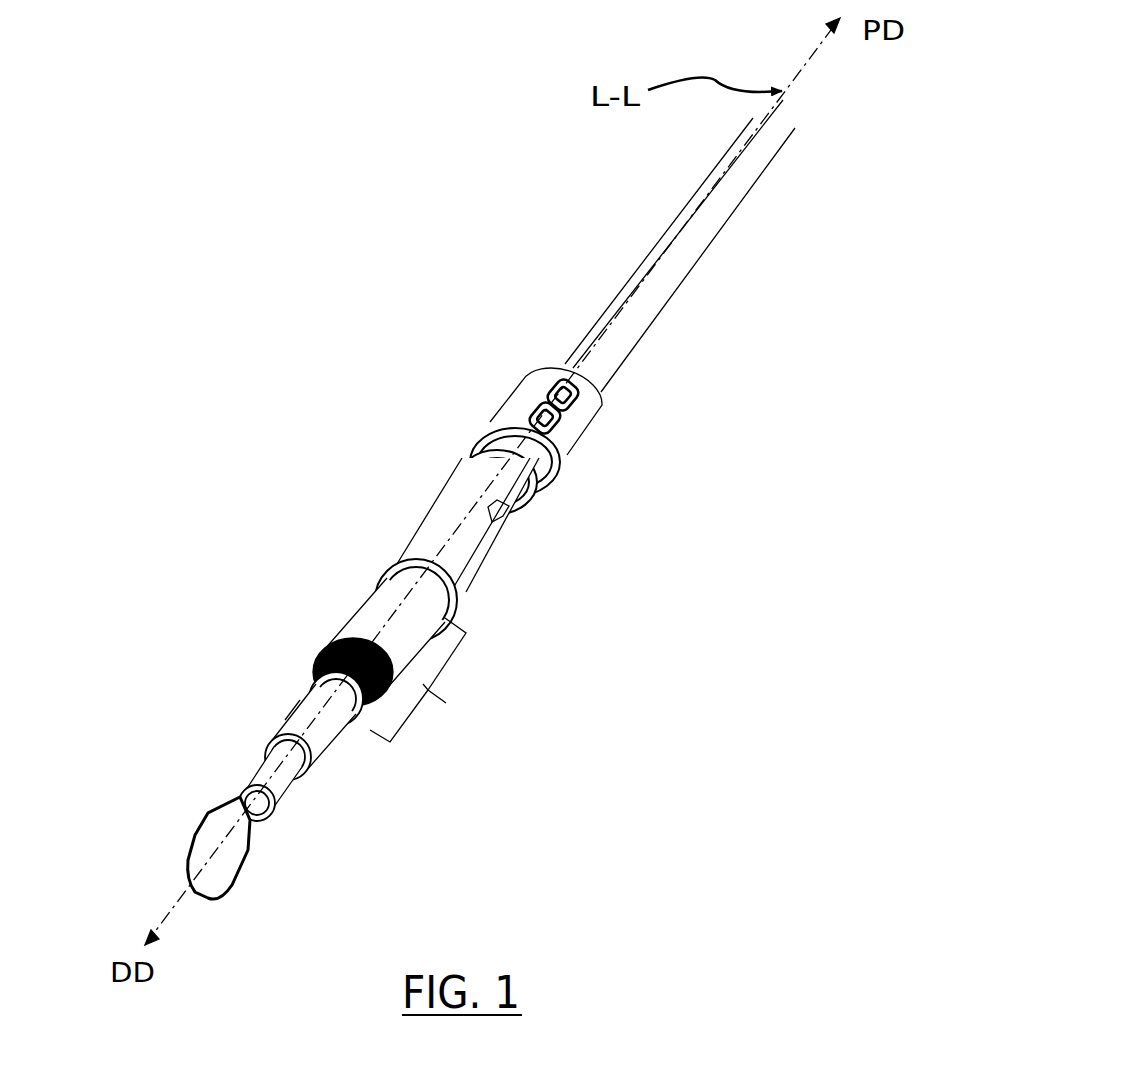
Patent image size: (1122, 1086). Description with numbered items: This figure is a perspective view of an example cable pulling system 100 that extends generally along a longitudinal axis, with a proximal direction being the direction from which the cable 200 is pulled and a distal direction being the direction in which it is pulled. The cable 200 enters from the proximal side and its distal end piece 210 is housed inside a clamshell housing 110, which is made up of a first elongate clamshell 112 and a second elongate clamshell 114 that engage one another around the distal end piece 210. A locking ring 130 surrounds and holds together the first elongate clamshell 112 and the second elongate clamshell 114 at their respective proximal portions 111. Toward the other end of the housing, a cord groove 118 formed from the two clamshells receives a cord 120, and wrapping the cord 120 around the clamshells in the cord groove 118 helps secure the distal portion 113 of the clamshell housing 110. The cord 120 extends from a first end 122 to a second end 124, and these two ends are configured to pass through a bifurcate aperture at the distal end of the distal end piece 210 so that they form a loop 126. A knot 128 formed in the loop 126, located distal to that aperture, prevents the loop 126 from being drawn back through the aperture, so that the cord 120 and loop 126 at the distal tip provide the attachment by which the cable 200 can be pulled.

The cable pulling system 100 is at (240, 384).
The clamshell housing 110 is at (385, 608).
The proximal portions 111 is at (240, 717).
The first elongate clamshell 112 is at (457, 512).
The distal portion 113 is at (592, 496).
The second elongate clamshell 114 is at (478, 555).
The cord groove 118 is at (430, 680).
The cord 120 is at (245, 863).
The first end 122 is at (275, 755).
The second end 124 is at (300, 796).
The loop 126 is at (213, 838).
The knot 128 is at (268, 812).
The locking ring 130 is at (522, 405).
The cable 200 is at (663, 283).
The distal end piece 210 is at (250, 776).